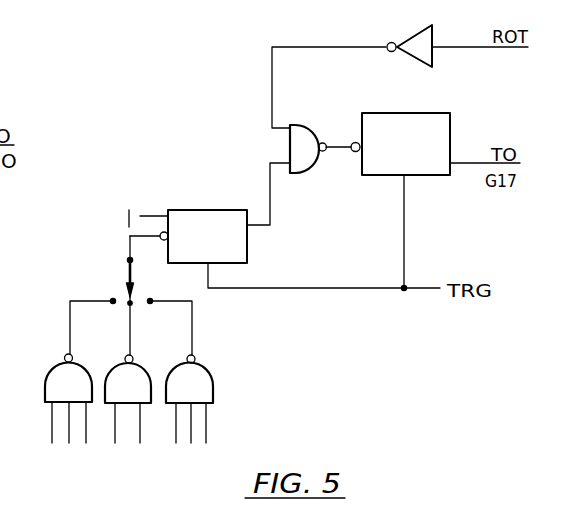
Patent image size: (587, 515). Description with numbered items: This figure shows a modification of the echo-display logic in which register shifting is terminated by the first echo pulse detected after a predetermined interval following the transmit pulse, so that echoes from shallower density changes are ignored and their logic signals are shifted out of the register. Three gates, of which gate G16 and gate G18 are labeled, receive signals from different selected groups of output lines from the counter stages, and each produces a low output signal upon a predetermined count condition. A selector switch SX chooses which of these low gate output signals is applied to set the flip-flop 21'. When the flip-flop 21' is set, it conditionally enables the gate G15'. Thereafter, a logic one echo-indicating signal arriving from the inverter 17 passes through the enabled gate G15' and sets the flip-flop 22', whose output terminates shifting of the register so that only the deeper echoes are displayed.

The inverter 17 is at (422, 31).
The flip-flop 22' is at (400, 130).
The flip-flop 21' is at (203, 220).
The gate G15' is at (308, 161).
The gate G16 is at (63, 364).
The gate G18 is at (197, 357).
The selector switch SX is at (128, 277).